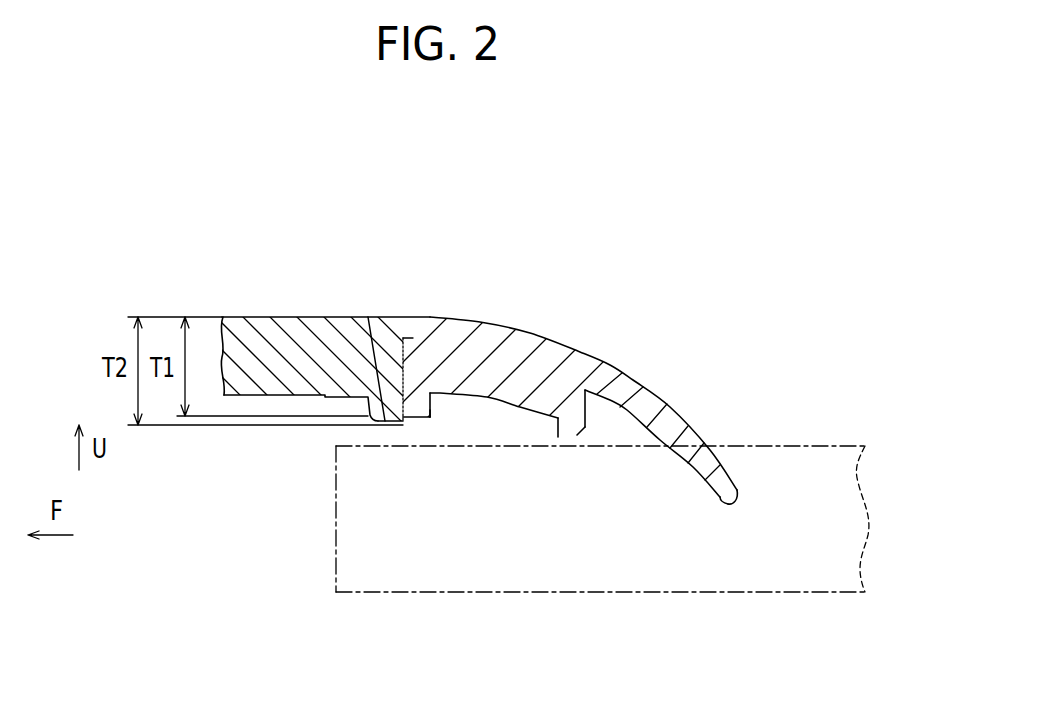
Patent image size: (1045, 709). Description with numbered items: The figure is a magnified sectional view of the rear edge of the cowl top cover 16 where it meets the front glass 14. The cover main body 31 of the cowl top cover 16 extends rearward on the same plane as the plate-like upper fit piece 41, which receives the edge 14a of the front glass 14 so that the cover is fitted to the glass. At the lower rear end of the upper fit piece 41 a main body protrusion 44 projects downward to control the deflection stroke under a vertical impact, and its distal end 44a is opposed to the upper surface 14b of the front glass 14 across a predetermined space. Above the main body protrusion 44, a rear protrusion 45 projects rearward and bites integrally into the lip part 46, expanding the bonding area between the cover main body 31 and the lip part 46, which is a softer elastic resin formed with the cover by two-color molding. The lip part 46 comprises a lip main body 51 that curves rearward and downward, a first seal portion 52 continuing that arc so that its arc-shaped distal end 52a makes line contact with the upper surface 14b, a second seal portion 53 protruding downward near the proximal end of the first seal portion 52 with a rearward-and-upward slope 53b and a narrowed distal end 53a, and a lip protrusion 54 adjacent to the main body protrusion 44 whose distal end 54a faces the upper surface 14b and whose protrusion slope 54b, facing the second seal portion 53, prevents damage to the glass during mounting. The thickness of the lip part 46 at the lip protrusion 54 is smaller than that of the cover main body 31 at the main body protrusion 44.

The front glass 14 is at (838, 446).
The edge 14a is at (337, 505).
The upper surface 14b is at (772, 446).
The cowl top cover 16 is at (550, 253).
The cover main body 31 is at (262, 317).
The upper fit piece 41 is at (318, 317).
The main body protrusion 44 is at (368, 317).
The distal end 44a is at (400, 423).
The rear protrusion 45 is at (413, 330).
The lip part 46 is at (623, 352).
The lip main body 51 is at (557, 352).
The first seal portion 52 is at (736, 489).
The distal end 52a is at (726, 496).
The second seal portion 53 is at (583, 437).
The distal end 53a is at (560, 440).
The slope 53b is at (578, 438).
The lip protrusion 54 is at (402, 421).
The distal end 54a is at (416, 417).
The protrusion slope 54b is at (432, 405).